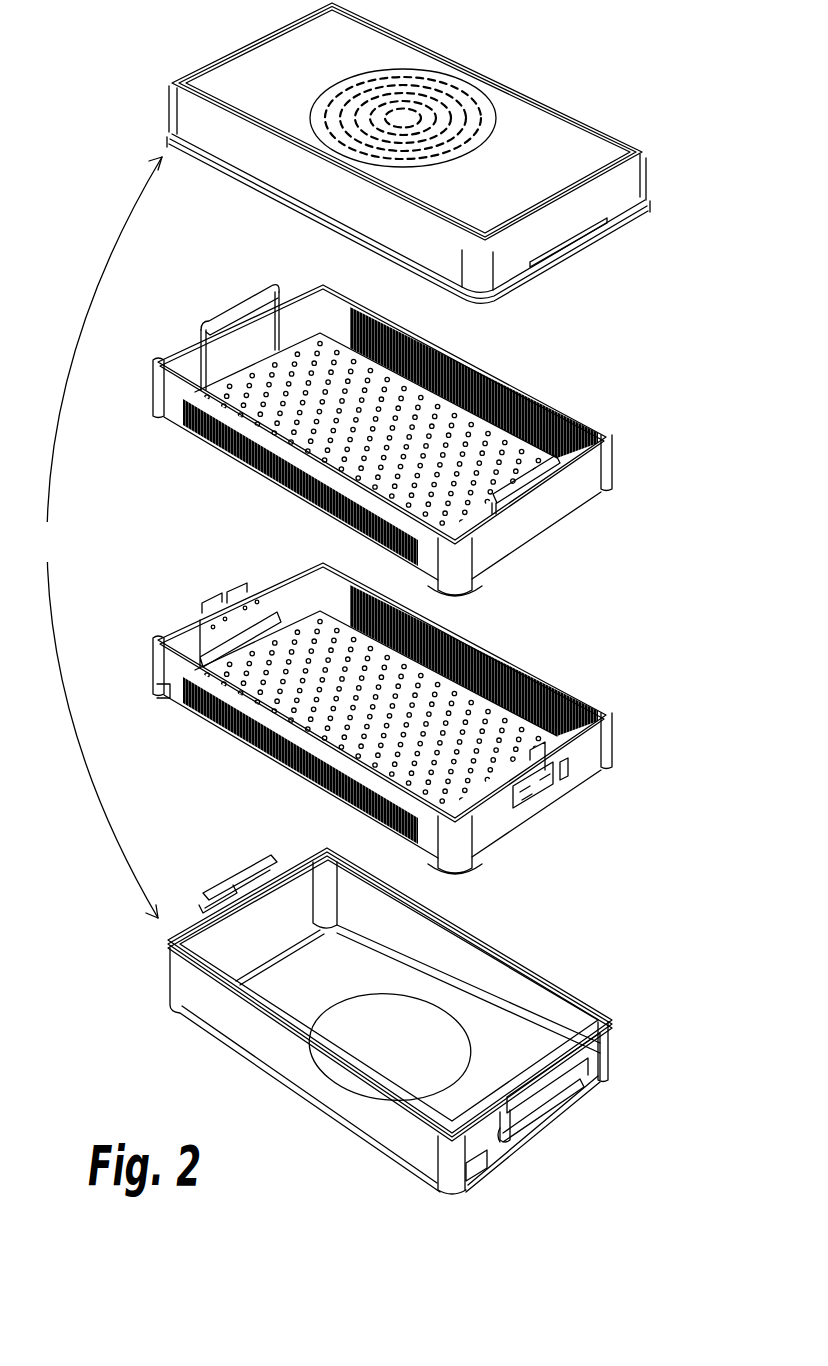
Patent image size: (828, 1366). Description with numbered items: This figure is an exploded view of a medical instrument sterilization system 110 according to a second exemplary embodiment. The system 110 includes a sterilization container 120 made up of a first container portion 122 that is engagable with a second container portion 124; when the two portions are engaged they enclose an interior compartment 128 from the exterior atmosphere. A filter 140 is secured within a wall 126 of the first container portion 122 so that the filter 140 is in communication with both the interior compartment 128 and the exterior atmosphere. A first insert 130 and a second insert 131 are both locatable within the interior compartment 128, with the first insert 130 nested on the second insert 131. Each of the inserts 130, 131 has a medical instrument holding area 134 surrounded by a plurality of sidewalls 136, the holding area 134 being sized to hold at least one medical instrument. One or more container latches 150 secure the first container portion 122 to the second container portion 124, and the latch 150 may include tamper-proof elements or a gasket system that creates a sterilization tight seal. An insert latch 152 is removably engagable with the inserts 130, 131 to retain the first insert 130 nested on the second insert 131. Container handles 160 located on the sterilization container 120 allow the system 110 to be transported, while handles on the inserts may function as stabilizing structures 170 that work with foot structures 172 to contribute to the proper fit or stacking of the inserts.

The medical instrument sterilization system 110 is at (99, 70).
The sterilization container 120 is at (95, 537).
The first container portion 122 is at (425, 153).
The second container portion 124 is at (424, 1021).
The wall 126 is at (293, 81).
The interior compartment 128 is at (446, 963).
The first insert 130 is at (573, 381).
The second insert 131 is at (605, 682).
The medical instrument holding area 134 is at (395, 403).
The sidewalls 136 is at (497, 388).
The filter 140 is at (459, 114).
The container latch 150 is at (220, 884).
The insert latch 152 is at (567, 778).
The container handle 160 is at (523, 1127).
The stabilizing structure 170 is at (231, 304).
The foot structure 172 is at (168, 700).